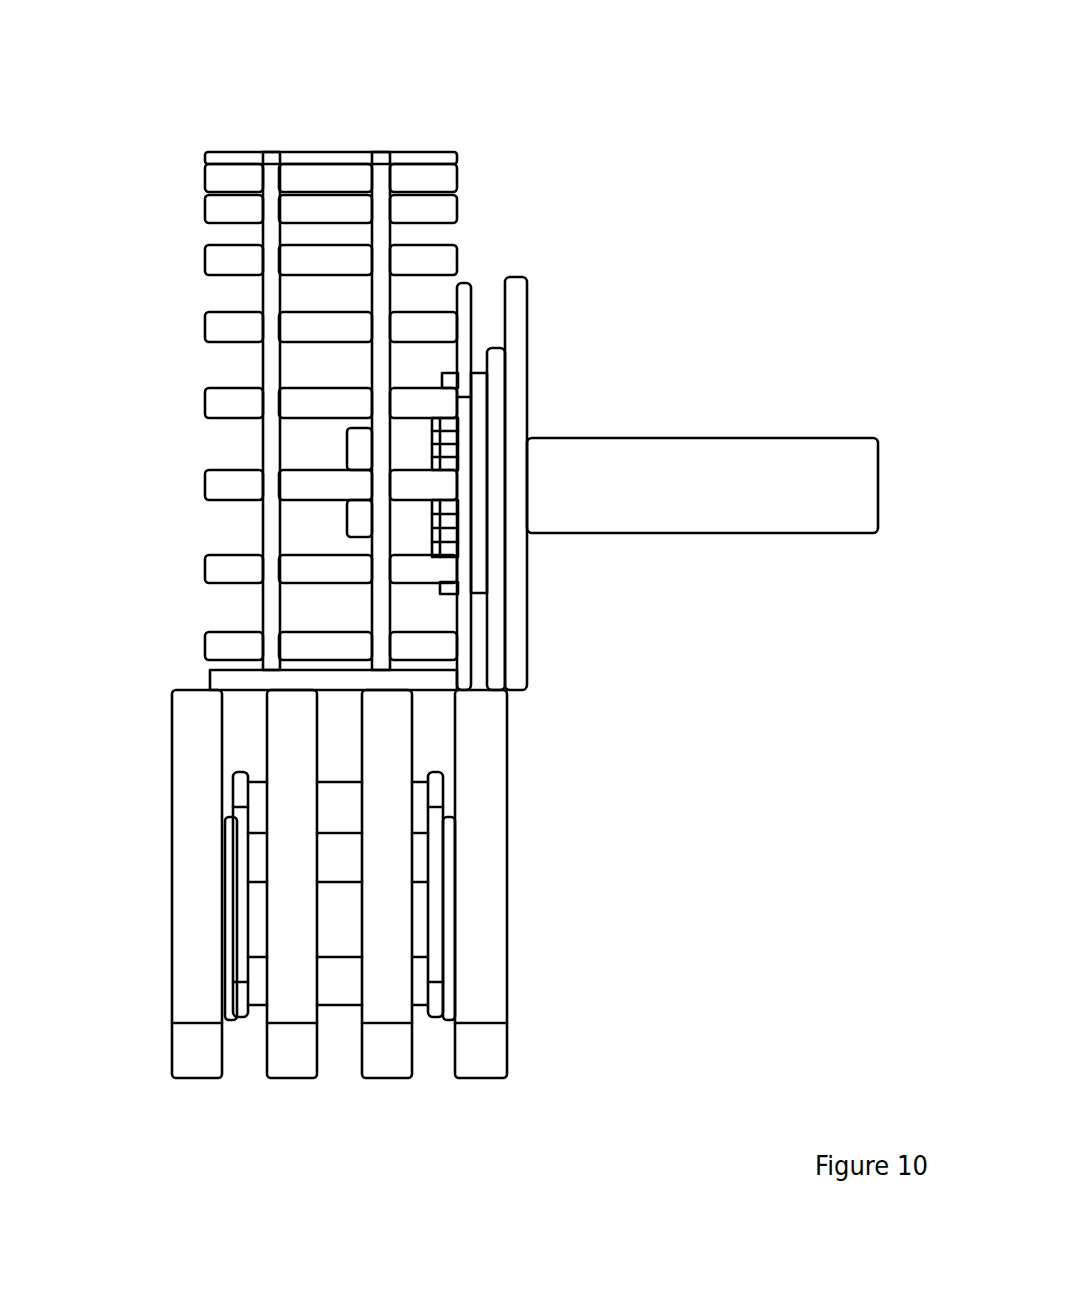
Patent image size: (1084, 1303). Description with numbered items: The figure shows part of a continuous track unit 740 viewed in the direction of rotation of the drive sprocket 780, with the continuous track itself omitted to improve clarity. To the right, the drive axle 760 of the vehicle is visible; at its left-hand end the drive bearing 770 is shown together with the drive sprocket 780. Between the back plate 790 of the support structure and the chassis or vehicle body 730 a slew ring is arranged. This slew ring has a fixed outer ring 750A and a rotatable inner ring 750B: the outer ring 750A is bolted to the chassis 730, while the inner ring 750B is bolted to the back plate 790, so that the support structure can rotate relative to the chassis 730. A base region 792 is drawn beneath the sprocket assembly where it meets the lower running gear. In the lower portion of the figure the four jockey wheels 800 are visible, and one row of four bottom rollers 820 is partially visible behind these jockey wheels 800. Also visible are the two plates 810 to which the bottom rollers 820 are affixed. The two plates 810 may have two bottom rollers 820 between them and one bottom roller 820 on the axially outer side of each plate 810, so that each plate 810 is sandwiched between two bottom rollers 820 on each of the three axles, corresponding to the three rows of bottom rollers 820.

The unit 740 is at (702, 119).
The chassis 730 is at (513, 323).
The fixed outer ring 750A is at (502, 392).
The rotatable inner ring 750B is at (478, 420).
The drive axle 760 is at (708, 491).
The drive bearing 770 is at (353, 450).
The drive sprocket 780 is at (228, 322).
The back plate 790 is at (463, 303).
The base plate 792 is at (228, 683).
The jockey wheels 800 is at (448, 525).
The plates 810 is at (222, 843).
The bottom rollers 820 is at (478, 1050).